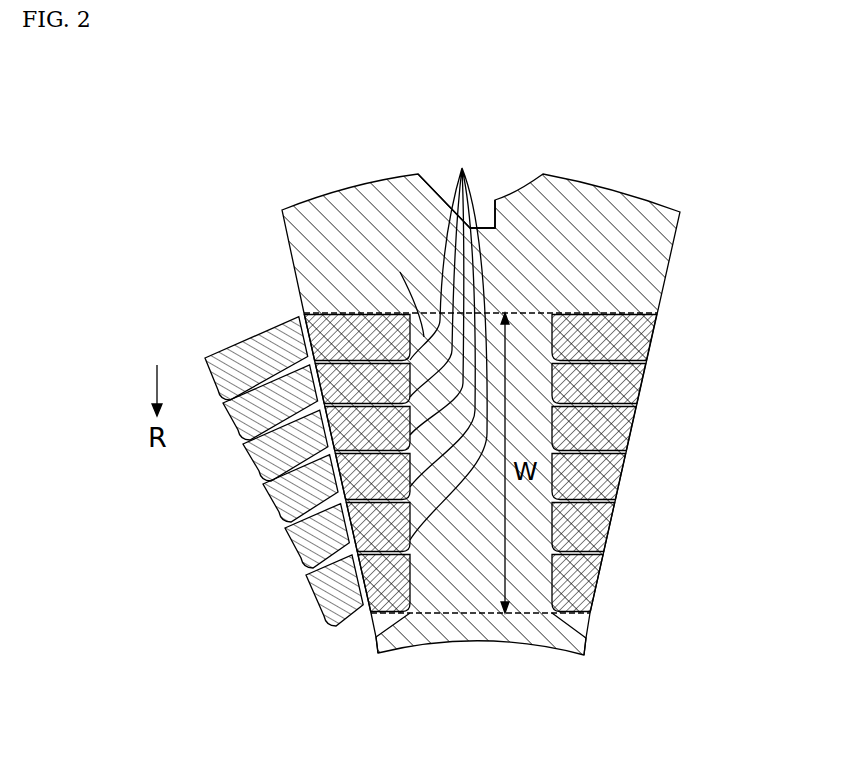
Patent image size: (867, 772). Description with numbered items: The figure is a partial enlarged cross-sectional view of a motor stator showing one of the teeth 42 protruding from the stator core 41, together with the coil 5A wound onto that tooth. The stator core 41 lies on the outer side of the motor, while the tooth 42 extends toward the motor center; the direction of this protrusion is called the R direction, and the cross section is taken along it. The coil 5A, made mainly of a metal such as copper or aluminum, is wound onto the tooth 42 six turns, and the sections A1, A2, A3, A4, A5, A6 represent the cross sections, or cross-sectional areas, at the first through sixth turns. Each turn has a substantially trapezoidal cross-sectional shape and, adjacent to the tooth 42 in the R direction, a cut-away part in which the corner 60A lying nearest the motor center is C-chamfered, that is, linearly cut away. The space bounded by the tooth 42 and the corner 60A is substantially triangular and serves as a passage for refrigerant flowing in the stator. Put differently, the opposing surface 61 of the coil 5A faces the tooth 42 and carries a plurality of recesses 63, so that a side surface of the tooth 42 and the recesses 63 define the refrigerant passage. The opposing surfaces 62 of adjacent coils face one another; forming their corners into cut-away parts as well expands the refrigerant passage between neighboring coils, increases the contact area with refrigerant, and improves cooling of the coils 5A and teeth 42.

The stator core 41 is at (665, 248).
The tooth 42 is at (536, 633).
The corner 60A is at (462, 170).
The recess 63 is at (462, 170).
The opposing surface 61 is at (400, 272).
The opposing surface 62 is at (283, 319).
The coil 5A is at (566, 465).
The first turn cross section A1 is at (598, 583).
The second turn cross section A2 is at (605, 527).
The third turn cross section A3 is at (611, 477).
The fourth turn cross section A4 is at (617, 429).
The fifth turn cross section A5 is at (622, 384).
The sixth turn cross section A6 is at (628, 338).